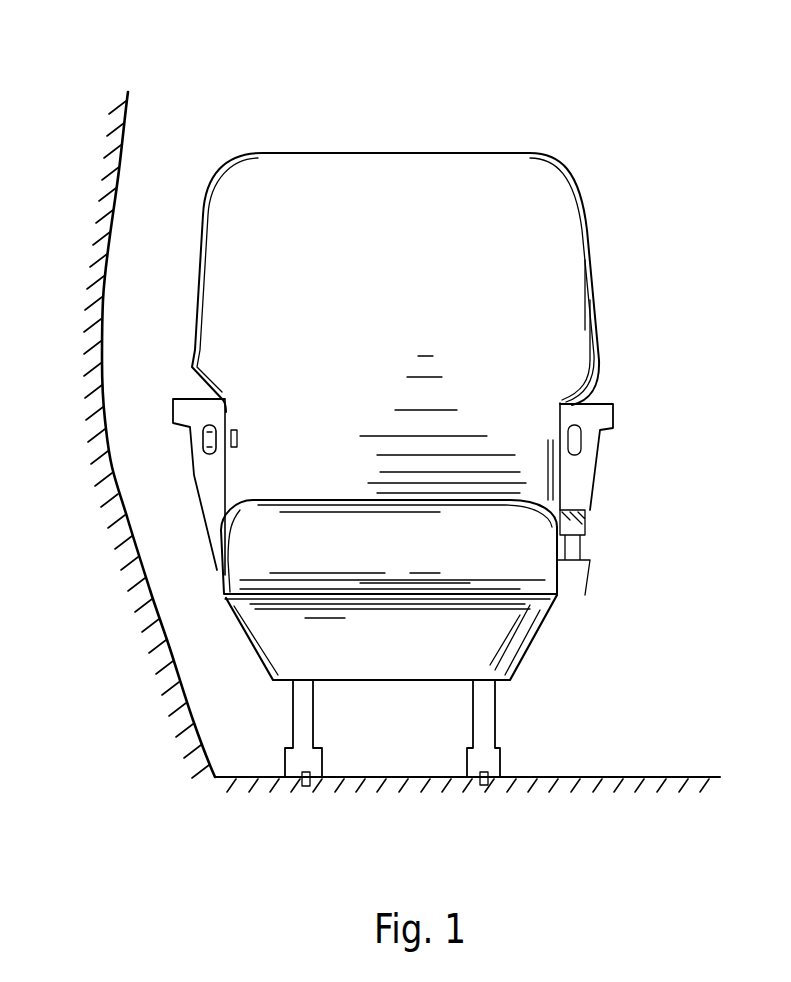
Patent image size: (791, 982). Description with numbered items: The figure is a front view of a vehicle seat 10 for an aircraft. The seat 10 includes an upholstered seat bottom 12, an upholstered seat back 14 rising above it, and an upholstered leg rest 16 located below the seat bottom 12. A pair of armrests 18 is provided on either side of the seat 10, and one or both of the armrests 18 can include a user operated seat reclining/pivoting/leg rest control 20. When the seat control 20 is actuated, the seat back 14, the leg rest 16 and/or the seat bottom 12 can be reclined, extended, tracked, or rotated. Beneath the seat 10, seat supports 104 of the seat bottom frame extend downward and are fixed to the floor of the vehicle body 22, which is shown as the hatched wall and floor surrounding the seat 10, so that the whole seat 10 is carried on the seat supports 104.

The vehicle seat 10 is at (631, 89).
The seat bottom 12 is at (540, 553).
The seat back 14 is at (530, 277).
The leg rest 16 is at (490, 633).
The armrests 18 is at (183, 423).
The seat reclining/pivoting/leg rest control 20 is at (205, 428).
The vehicle body 22 is at (98, 411).
The seat supports 104 is at (485, 719).